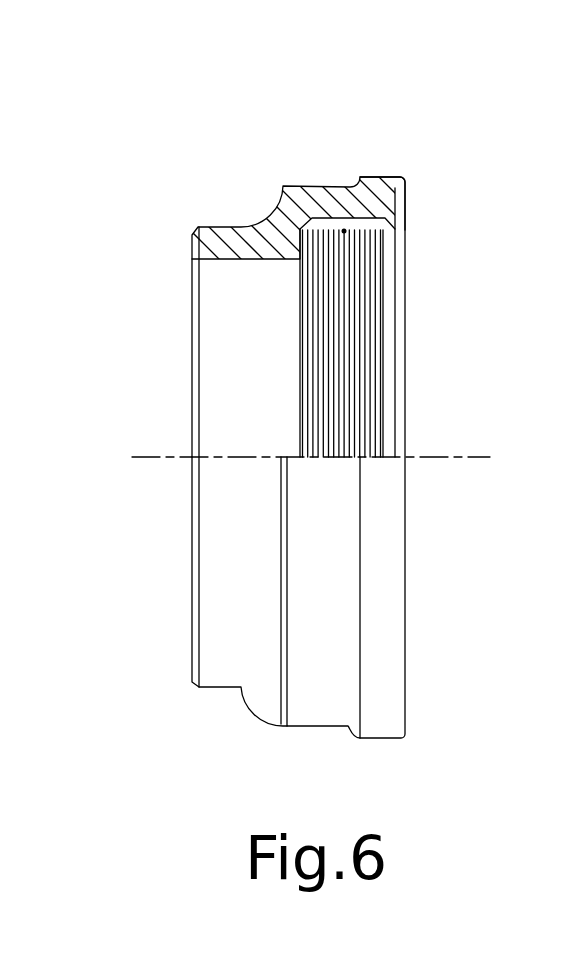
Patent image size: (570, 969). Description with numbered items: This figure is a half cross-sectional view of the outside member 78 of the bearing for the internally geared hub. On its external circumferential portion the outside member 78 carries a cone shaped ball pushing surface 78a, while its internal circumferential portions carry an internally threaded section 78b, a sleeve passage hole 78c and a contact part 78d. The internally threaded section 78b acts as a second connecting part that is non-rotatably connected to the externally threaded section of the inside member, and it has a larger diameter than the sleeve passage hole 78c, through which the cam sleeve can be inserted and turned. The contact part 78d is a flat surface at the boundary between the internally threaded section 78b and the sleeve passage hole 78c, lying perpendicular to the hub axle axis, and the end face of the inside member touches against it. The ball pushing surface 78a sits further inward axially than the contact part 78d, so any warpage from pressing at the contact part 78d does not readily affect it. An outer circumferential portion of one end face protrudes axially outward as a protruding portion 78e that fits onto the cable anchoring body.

The outside member 78 is at (415, 181).
The ball pushing surface 78a is at (250, 227).
The internally threaded section 78b is at (344, 230).
The sleeve passage hole 78c is at (252, 260).
The contact part 78d is at (247, 222).
The protruding portion 78e is at (395, 177).